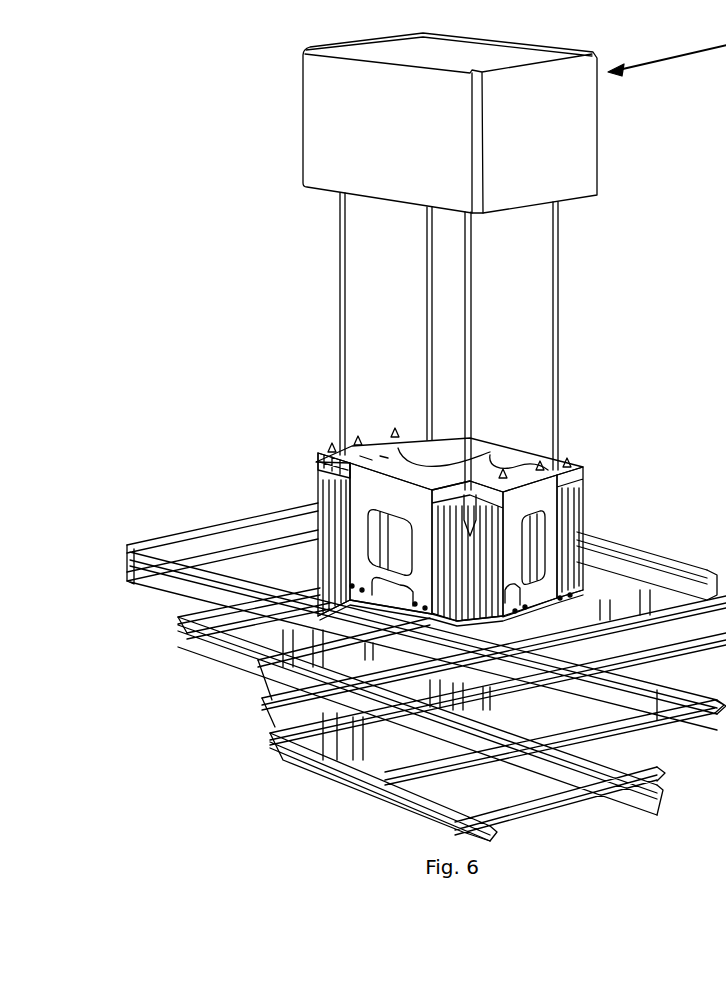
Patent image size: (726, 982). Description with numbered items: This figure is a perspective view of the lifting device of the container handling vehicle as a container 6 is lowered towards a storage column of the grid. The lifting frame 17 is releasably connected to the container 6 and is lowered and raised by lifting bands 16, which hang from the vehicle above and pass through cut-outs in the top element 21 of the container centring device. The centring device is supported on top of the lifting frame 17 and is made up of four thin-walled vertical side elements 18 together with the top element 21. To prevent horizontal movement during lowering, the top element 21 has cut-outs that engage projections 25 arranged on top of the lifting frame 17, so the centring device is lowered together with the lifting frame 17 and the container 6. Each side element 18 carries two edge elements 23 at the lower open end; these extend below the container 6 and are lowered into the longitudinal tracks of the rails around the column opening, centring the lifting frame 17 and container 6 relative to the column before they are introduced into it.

The container 6 is at (333, 543).
The lifting bands 16 is at (556, 295).
The lifting frame 17 is at (332, 468).
The side elements 18 is at (573, 500).
The top element 21 is at (383, 455).
The edge elements 23 is at (510, 622).
The projections 25 is at (393, 437).